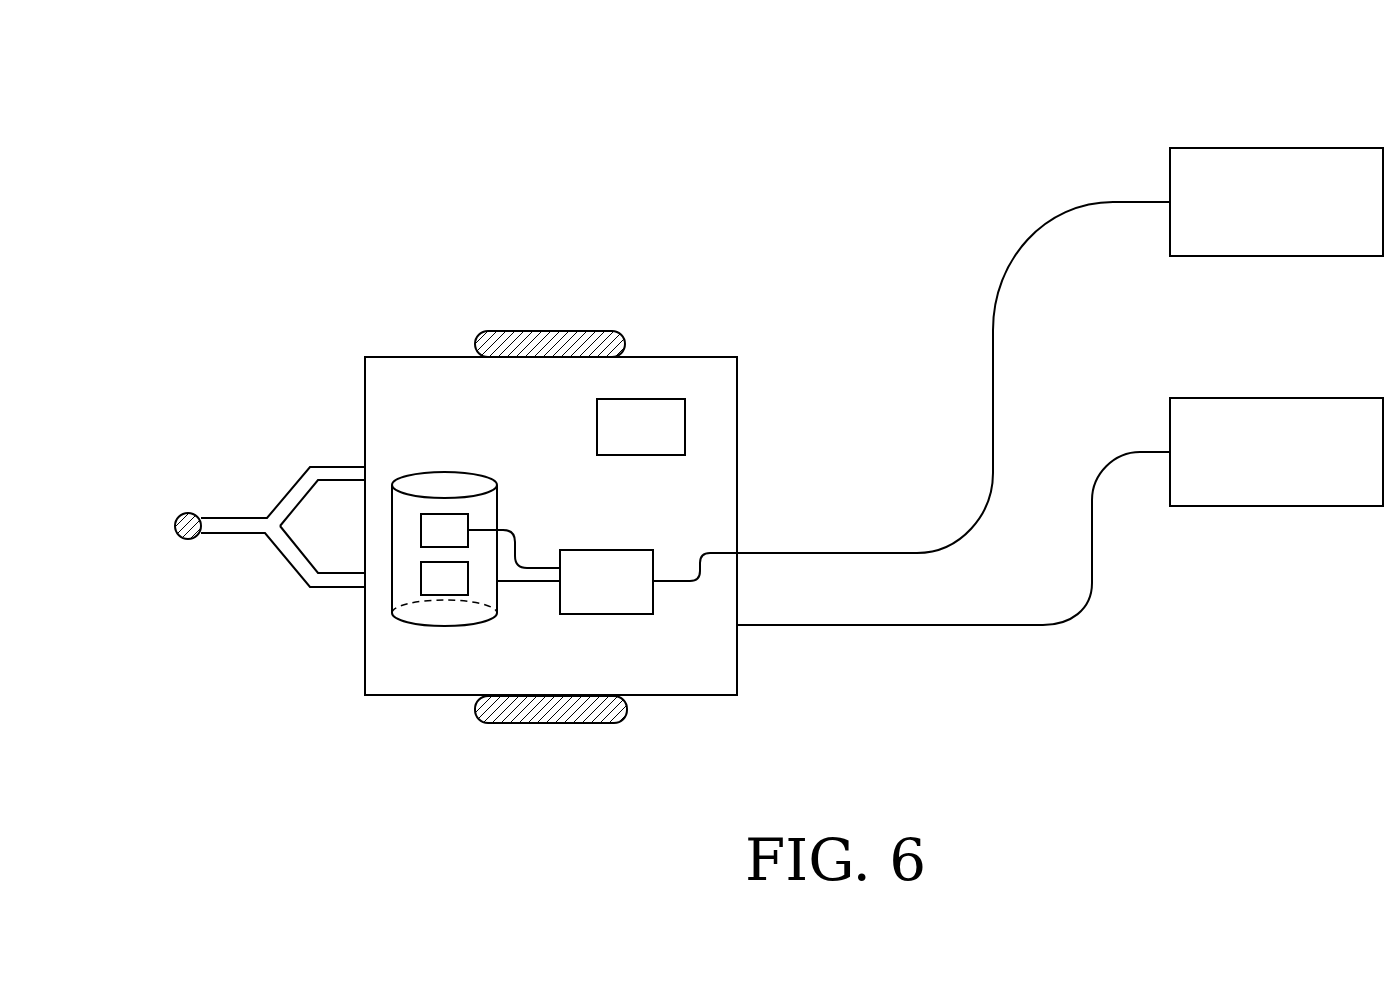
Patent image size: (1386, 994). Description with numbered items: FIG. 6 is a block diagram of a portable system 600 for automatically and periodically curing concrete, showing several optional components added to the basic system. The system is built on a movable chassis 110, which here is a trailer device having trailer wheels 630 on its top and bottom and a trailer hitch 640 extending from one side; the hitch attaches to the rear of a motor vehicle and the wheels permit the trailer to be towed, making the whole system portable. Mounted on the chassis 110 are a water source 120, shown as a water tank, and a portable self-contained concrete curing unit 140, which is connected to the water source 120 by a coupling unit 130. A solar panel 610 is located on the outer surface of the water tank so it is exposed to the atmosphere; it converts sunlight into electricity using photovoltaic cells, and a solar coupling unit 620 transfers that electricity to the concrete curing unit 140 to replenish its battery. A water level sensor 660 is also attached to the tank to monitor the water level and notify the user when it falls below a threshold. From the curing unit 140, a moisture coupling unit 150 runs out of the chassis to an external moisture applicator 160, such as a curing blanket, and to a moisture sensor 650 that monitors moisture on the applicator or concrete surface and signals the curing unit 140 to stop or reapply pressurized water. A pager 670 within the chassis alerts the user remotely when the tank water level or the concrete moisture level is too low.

The portable system for automatically and periodically curing concrete 600 is at (757, 297).
The movable chassis 110 is at (737, 435).
The water source 120 is at (463, 471).
The coupling unit 130 is at (525, 585).
The portable self-contained concrete curing unit 140 is at (607, 550).
The moisture coupling unit 150 is at (838, 553).
The moisture applicator 160 is at (1283, 148).
The solar panel 610 is at (438, 514).
The solar coupling unit 620 is at (518, 540).
The trailer wheels 630 is at (577, 331).
The trailer hitch 640 is at (178, 516).
The moisture sensor 650 is at (1283, 398).
The water level sensor 660 is at (445, 597).
The pager 670 is at (645, 399).